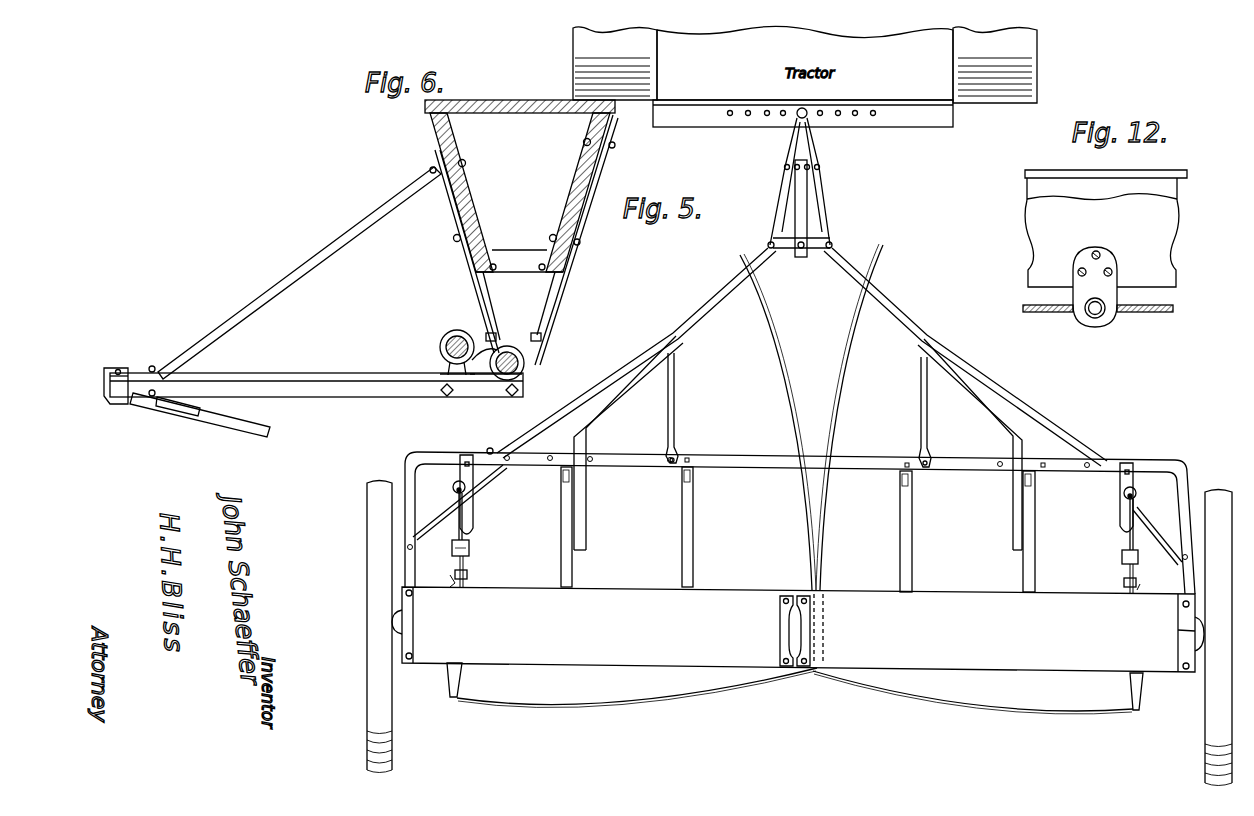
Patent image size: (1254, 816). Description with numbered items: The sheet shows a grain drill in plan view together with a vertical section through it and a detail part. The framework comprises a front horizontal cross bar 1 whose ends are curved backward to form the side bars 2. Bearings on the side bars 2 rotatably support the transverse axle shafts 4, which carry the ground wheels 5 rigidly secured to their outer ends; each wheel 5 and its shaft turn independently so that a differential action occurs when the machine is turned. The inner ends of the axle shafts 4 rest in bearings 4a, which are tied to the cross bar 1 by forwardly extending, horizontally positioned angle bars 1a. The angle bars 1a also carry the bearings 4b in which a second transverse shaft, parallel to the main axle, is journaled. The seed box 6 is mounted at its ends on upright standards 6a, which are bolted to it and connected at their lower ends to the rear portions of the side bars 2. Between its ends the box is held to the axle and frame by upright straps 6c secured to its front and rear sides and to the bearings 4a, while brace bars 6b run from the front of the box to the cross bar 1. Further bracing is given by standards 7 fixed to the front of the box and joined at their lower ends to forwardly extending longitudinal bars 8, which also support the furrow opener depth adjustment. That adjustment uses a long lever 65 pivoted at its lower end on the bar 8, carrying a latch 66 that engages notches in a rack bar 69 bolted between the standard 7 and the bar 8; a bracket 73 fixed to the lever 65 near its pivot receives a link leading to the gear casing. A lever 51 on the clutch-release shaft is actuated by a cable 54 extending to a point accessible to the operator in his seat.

In FIG. 6, the front horizontal cross bar 1 is at (117, 370).
In FIG. 5, the front horizontal cross bar 1 is at (730, 458).
In FIG. 6, the angle bars 1a is at (328, 398).
In FIG. 5, the angle bars 1a is at (1042, 570).
In FIG. 5, the side bars 2 is at (410, 518).
In FIG. 6, the axle shafts 4 is at (500, 372).
In FIG. 6, the bearings 4a is at (524, 365).
In FIG. 6, the bearings 4b is at (440, 347).
In FIG. 5, the ground wheels 5 is at (373, 613).
In FIG. 6, the seed box 6 is at (521, 232).
In FIG. 5, the seed box 6 is at (540, 443).
In FIG. 12, the seed box 6 is at (1106, 228).
In FIG. 5, the upright standards 6a is at (1210, 606).
In FIG. 6, the brace bars 6b is at (288, 276).
In FIG. 5, the brace bars 6b is at (569, 556).
In FIG. 6, the upright straps 6c is at (492, 298).
In FIG. 5, the standards 7 is at (1184, 634).
In FIG. 5, the longitudinal bars 8 is at (475, 512).
In FIG. 5, the lever 51 is at (452, 688).
In FIG. 5, the cable 54 is at (670, 703).
In FIG. 12, the cable 54 is at (1052, 313).
In FIG. 5, the long lever 65 is at (456, 500).
In FIG. 5, the latch 66 is at (470, 548).
In FIG. 5, the rack bar 69 is at (468, 576).
In FIG. 5, the bracket 73 is at (451, 579).